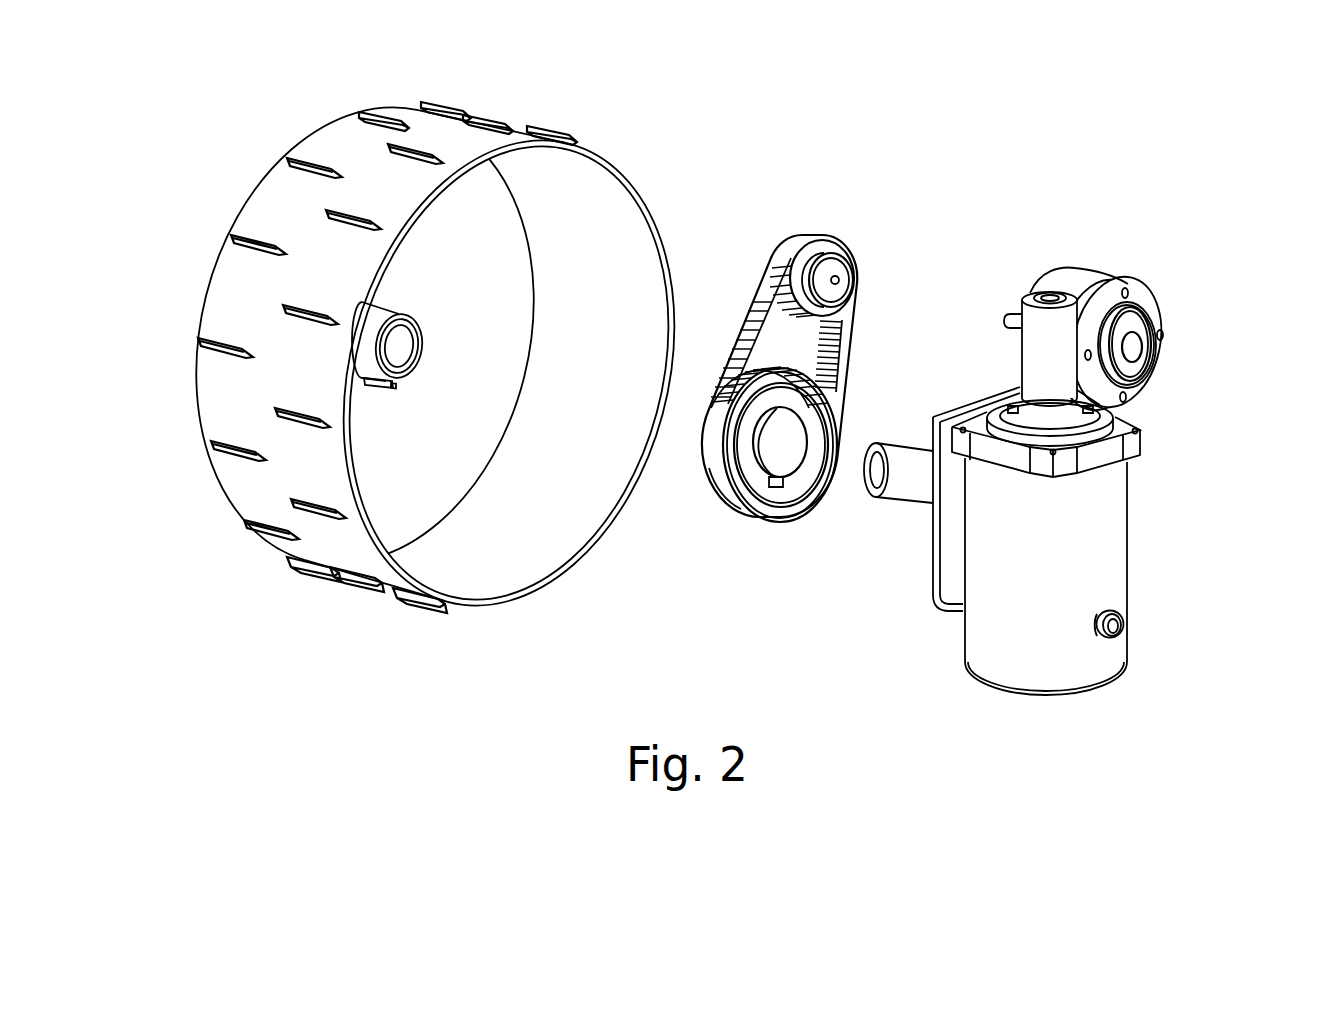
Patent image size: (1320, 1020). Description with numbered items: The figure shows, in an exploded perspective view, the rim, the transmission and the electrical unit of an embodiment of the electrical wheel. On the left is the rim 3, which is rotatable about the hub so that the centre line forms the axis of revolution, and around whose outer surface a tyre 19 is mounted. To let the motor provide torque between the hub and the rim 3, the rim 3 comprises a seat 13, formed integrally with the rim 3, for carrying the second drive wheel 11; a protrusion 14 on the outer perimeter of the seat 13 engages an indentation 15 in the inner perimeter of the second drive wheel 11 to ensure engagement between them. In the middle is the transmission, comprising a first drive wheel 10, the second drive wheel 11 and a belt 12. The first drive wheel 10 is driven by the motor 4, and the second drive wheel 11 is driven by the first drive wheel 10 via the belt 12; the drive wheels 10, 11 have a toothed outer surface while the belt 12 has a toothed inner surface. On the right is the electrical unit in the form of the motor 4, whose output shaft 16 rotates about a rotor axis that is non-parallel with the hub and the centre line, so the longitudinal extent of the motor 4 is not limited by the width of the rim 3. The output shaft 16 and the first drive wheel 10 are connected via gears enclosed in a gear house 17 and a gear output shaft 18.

The rim 3 is at (256, 486).
The motor 4 is at (1003, 663).
The first drive wheel 10 is at (823, 262).
The second drive wheel 11 is at (738, 515).
The belt 12 is at (836, 346).
The seat 13 is at (420, 345).
The protrusion 14 is at (397, 387).
The indentation 15 is at (790, 490).
The output shaft 16 is at (1063, 330).
The gear house 17 is at (1170, 322).
The gear output shaft 18 is at (1014, 316).
The tyre 19 is at (812, 200).